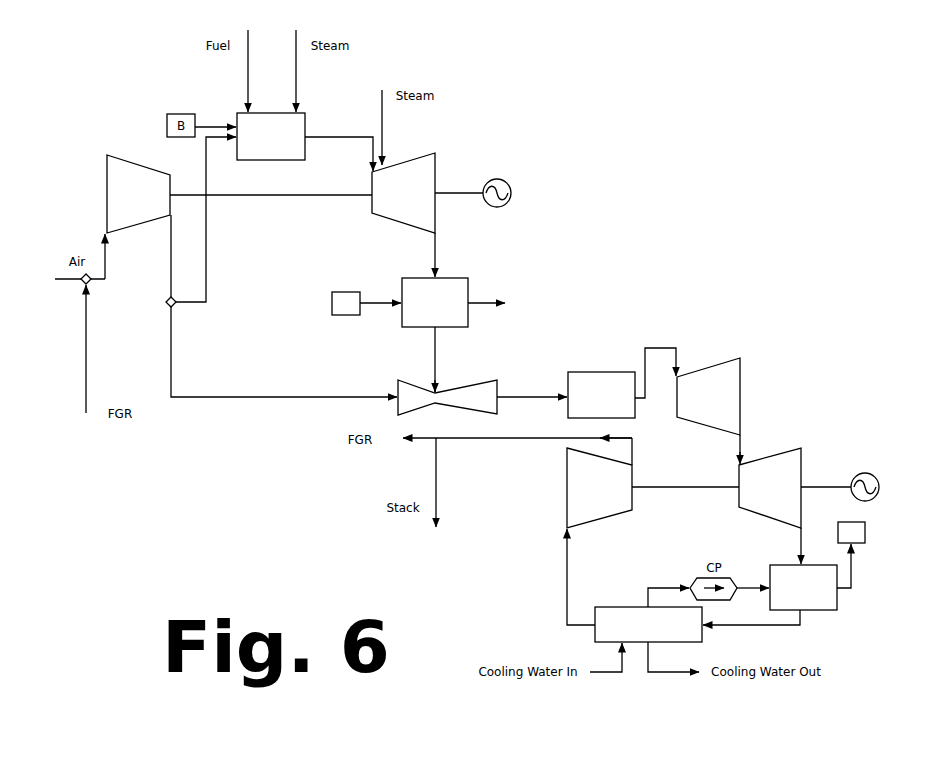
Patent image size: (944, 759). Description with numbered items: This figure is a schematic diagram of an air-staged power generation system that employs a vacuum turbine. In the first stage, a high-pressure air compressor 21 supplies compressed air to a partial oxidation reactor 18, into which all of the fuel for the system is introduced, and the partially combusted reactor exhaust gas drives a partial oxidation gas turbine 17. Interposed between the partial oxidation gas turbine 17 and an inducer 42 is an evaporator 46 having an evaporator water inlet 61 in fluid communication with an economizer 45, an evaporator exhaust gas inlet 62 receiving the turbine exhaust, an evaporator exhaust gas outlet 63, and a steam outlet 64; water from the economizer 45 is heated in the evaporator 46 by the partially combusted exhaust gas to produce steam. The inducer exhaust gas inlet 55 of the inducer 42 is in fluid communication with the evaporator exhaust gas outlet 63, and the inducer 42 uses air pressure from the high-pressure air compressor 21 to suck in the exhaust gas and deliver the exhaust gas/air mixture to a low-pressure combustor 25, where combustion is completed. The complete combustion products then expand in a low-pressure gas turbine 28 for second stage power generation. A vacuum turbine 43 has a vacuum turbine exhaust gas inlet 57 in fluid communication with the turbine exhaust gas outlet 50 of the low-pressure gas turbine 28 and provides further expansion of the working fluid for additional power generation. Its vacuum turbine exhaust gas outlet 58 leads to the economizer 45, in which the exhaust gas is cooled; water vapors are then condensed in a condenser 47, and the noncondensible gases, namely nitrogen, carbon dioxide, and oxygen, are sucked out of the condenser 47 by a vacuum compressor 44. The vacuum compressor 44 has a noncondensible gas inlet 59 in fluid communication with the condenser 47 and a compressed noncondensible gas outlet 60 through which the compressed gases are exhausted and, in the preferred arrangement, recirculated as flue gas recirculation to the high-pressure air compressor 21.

The partial oxidation gas turbine 17 is at (435, 160).
The partial oxidation reactor 18 is at (305, 120).
The high-pressure air compressor 21 is at (122, 155).
The low-pressure combustor 25 is at (603, 372).
The low-pressure gas turbine 28 is at (717, 360).
The inducer 42 is at (470, 383).
The vacuum turbine 43 is at (802, 455).
The vacuum compressor 44 is at (567, 490).
The economizer 45 is at (837, 598).
The evaporator 46 is at (402, 318).
The condenser 47 is at (632, 645).
The turbine exhaust gas outlet 50 is at (743, 425).
The inducer exhaust gas inlet 55 is at (432, 390).
The vacuum turbine exhaust gas inlet 57 is at (745, 458).
The vacuum turbine exhaust gas outlet 58 is at (800, 528).
The noncondensible gas inlet 59 is at (567, 528).
The compressed noncondensible gas outlet 60 is at (633, 460).
The evaporator water inlet 61 is at (402, 290).
The evaporator exhaust gas inlet 62 is at (442, 273).
The evaporator exhaust gas outlet 63 is at (437, 330).
The steam outlet 64 is at (470, 310).